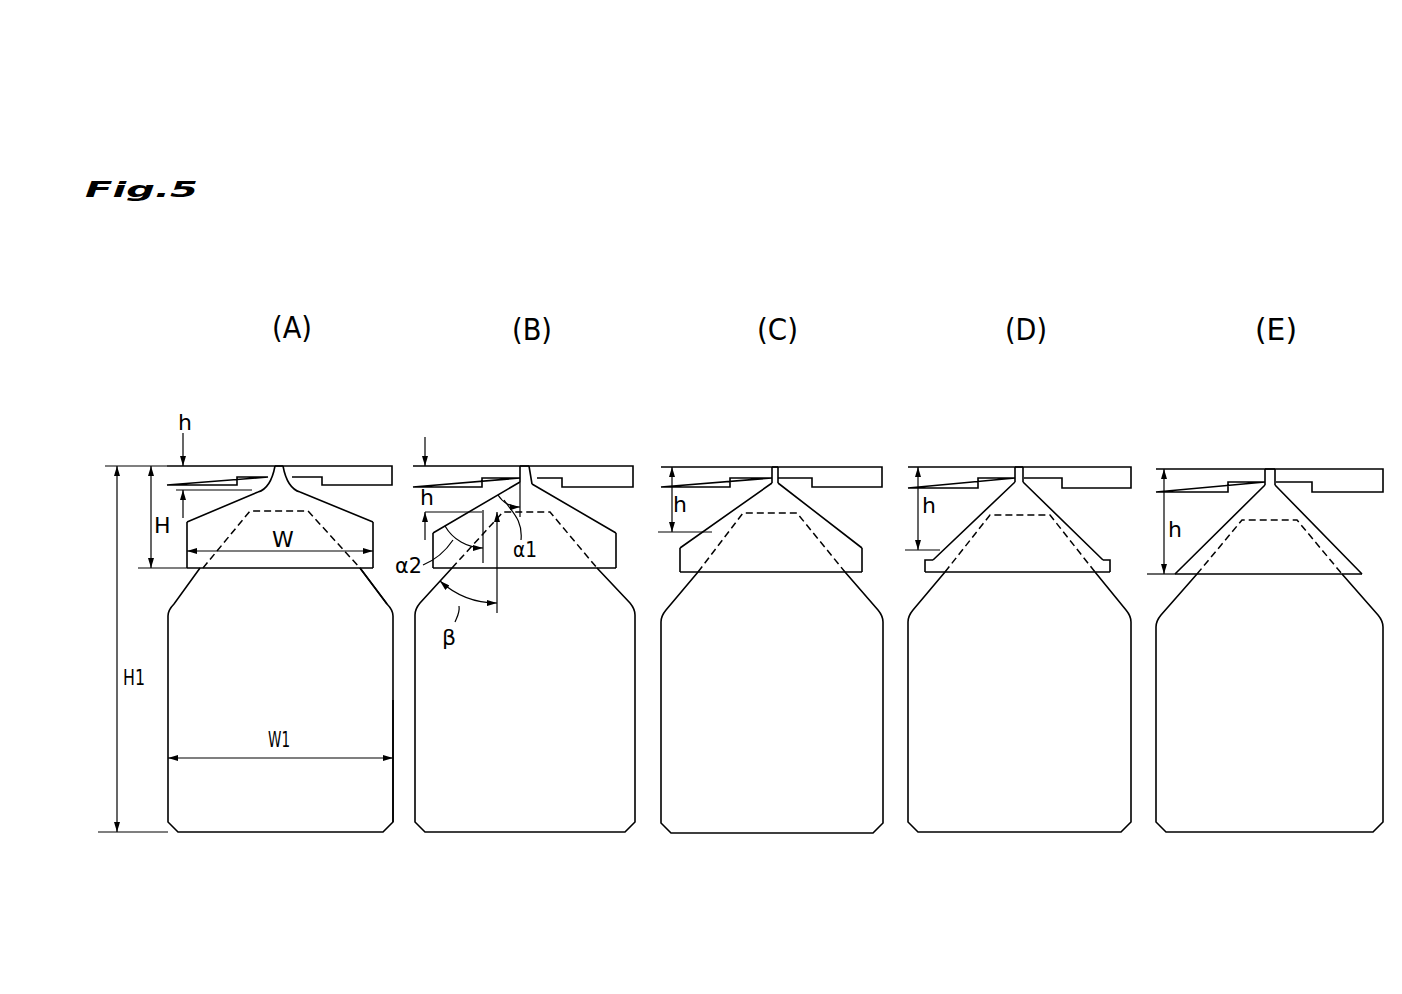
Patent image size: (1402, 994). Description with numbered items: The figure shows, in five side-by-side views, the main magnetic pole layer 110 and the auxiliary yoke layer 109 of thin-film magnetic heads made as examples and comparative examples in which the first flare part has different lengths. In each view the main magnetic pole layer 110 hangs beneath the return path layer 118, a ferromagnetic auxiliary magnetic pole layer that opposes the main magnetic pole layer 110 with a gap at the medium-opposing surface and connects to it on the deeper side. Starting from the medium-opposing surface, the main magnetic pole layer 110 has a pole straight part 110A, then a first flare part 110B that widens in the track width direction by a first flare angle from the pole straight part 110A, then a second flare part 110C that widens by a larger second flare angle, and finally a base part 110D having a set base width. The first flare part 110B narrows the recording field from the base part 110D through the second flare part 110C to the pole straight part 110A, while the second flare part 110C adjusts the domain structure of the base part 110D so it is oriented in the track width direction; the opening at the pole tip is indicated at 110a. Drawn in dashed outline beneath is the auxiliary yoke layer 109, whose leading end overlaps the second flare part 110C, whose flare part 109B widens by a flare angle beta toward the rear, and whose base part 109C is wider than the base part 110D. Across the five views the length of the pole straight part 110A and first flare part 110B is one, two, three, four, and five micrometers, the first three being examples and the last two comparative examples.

The auxiliary yoke layer 109 is at (263, 820).
The flare part 109B is at (386, 600).
The base part 109C is at (393, 785).
The main magnetic pole layer 110 is at (197, 568).
The nozzle opening 110a is at (276, 466).
The pole straight part 110A is at (288, 472).
The first flare part 110B is at (297, 482).
The second flare part 110C is at (343, 505).
The base part 110D is at (375, 542).
The return path layer 118 is at (204, 466).